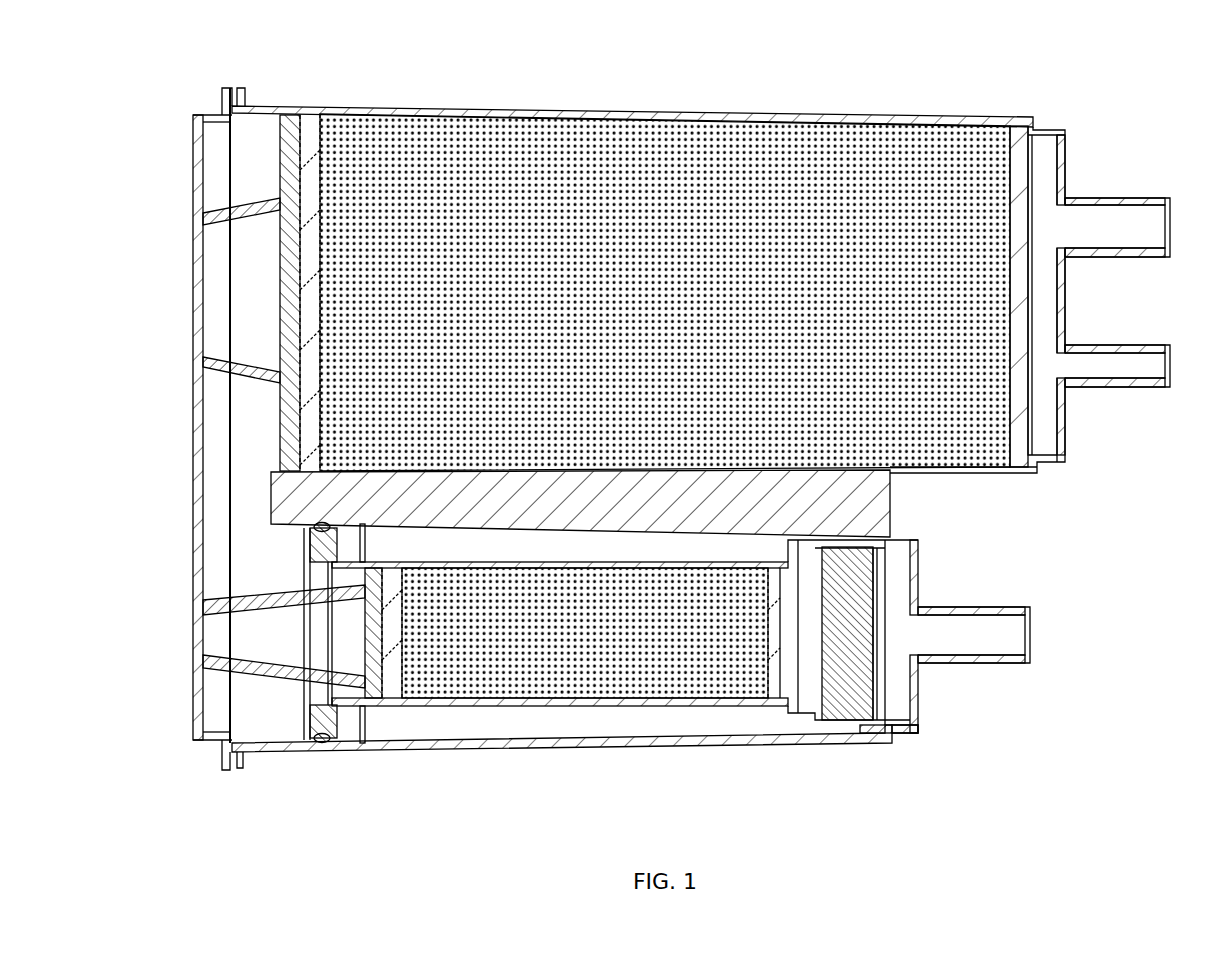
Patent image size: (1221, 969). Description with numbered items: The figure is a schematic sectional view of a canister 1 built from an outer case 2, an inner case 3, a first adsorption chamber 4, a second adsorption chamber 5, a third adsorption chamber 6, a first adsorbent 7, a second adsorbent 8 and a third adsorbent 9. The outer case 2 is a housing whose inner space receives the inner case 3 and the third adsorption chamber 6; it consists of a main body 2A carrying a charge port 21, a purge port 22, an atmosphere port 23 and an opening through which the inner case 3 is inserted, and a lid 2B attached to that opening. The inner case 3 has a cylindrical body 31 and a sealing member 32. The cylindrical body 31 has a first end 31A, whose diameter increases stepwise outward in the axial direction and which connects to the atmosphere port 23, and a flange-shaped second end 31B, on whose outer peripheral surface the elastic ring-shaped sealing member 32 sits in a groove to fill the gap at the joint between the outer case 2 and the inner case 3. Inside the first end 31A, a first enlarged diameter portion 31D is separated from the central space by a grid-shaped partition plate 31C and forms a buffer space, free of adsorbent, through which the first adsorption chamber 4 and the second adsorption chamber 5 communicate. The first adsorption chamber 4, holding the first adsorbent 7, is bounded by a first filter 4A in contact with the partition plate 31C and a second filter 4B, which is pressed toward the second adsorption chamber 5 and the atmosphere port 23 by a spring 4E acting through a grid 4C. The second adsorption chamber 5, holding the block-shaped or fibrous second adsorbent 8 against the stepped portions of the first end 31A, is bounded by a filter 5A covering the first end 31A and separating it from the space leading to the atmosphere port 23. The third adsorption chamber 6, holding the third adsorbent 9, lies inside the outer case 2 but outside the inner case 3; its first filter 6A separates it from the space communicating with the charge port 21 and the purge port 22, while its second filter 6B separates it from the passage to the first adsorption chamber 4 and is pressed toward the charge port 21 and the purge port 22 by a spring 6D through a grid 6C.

The canister 1 is at (1170, 107).
The outer case 2 is at (1052, 130).
The main body 2A is at (817, 118).
The lid 2B is at (197, 200).
The charge port 21 is at (1140, 222).
The purge port 22 is at (1140, 363).
The atmosphere port 23 is at (1005, 627).
The inner case 3 is at (298, 702).
The cylindrical body 31 is at (303, 568).
The first end 31A is at (815, 720).
The second end 31B is at (343, 722).
The partition plate 31C is at (800, 555).
The first enlarged diameter portion 31D is at (807, 620).
The sealing member 32 is at (320, 743).
The first adsorption chamber 4 is at (513, 702).
The first filter 4A is at (778, 703).
The second filter 4B is at (388, 702).
The grid 4C is at (365, 647).
The spring 4E is at (217, 667).
The second adsorption chamber 5 is at (852, 722).
The filter 5A is at (873, 743).
The third adsorption chamber 6 is at (690, 120).
The first filter 6A is at (1023, 137).
The second filter 6B is at (313, 118).
The grid 6C is at (290, 333).
The spring 6D is at (235, 370).
The first adsorbent 7 is at (630, 678).
The second adsorbent 8 is at (862, 688).
The third adsorbent 9 is at (533, 143).